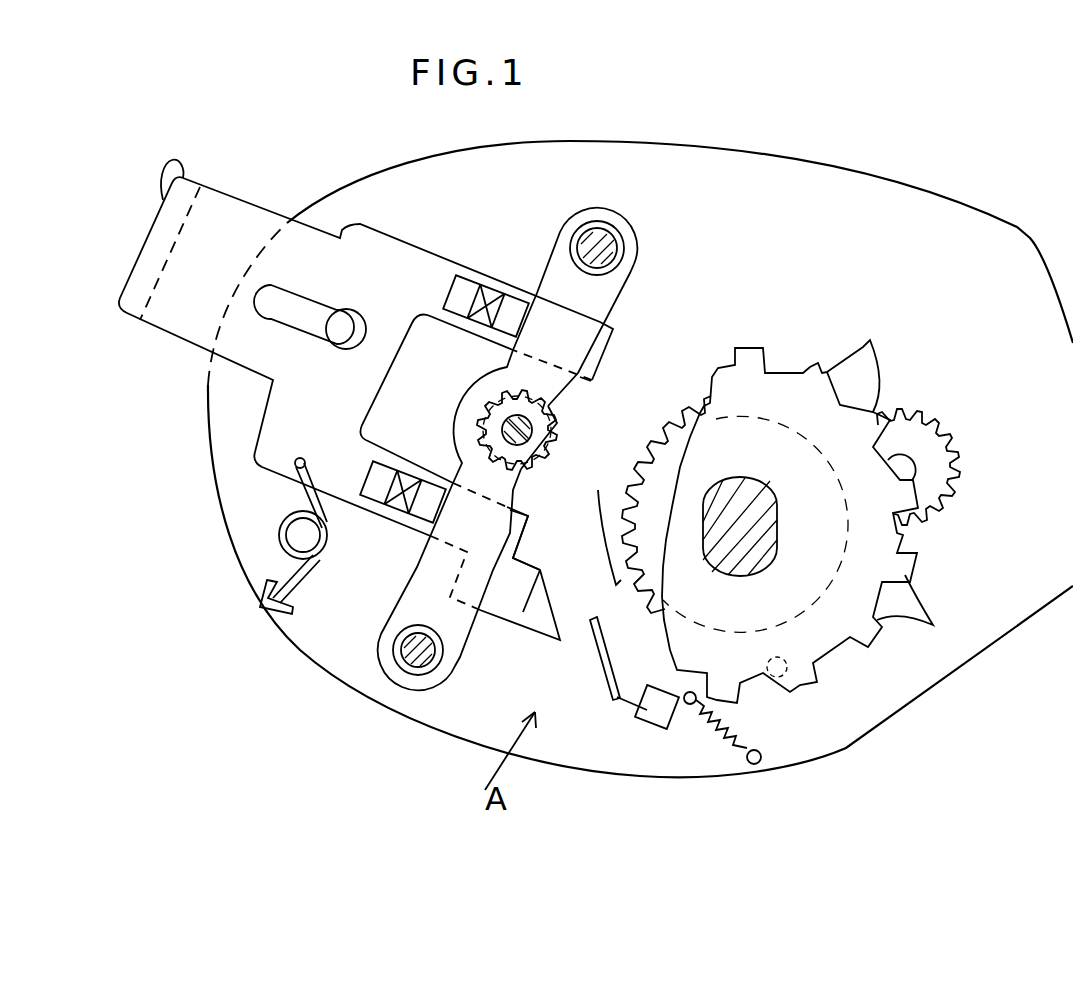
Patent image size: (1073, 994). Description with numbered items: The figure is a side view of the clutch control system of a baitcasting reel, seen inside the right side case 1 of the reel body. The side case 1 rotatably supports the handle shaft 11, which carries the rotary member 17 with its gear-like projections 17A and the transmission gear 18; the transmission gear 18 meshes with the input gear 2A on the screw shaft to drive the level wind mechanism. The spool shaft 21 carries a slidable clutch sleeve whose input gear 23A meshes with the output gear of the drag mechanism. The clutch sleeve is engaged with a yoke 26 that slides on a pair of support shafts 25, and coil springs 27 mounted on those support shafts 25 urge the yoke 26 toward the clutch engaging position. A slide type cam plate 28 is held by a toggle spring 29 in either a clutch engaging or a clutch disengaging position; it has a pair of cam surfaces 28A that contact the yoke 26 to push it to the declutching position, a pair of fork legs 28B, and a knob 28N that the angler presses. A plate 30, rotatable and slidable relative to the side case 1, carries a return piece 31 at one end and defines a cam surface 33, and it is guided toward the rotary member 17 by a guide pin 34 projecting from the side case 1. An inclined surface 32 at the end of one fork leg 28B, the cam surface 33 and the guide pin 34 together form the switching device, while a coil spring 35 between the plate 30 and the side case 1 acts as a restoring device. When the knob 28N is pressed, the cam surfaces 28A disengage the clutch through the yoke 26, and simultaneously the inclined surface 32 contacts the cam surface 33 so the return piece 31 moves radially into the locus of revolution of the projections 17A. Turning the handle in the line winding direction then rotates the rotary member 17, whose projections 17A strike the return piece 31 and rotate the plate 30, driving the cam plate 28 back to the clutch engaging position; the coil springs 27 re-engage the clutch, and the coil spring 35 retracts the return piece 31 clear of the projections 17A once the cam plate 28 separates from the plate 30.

The side case 1 is at (978, 234).
The input gear 2A is at (927, 440).
The handle shaft 11 is at (763, 520).
The rotary member 17 is at (777, 383).
The gear-like projections 17A is at (870, 340).
The transmission gear 18 is at (677, 453).
The spool shaft 21 is at (487, 420).
The input gear 23A is at (557, 423).
The support shafts 25 is at (607, 240).
The yoke 26 is at (600, 300).
The coil springs 27 is at (575, 245).
The cam plate 28 is at (403, 240).
The cam surfaces 28A is at (492, 300).
The fork legs 28B is at (603, 350).
The knob 28N is at (164, 190).
The toggle spring 29 is at (307, 567).
The plate 30 is at (597, 519).
The return piece 31 is at (655, 722).
The inclined surface 32 is at (547, 582).
The cam surface 33 is at (598, 672).
The guide pin 34 is at (775, 680).
The coil spring 35 is at (720, 733).